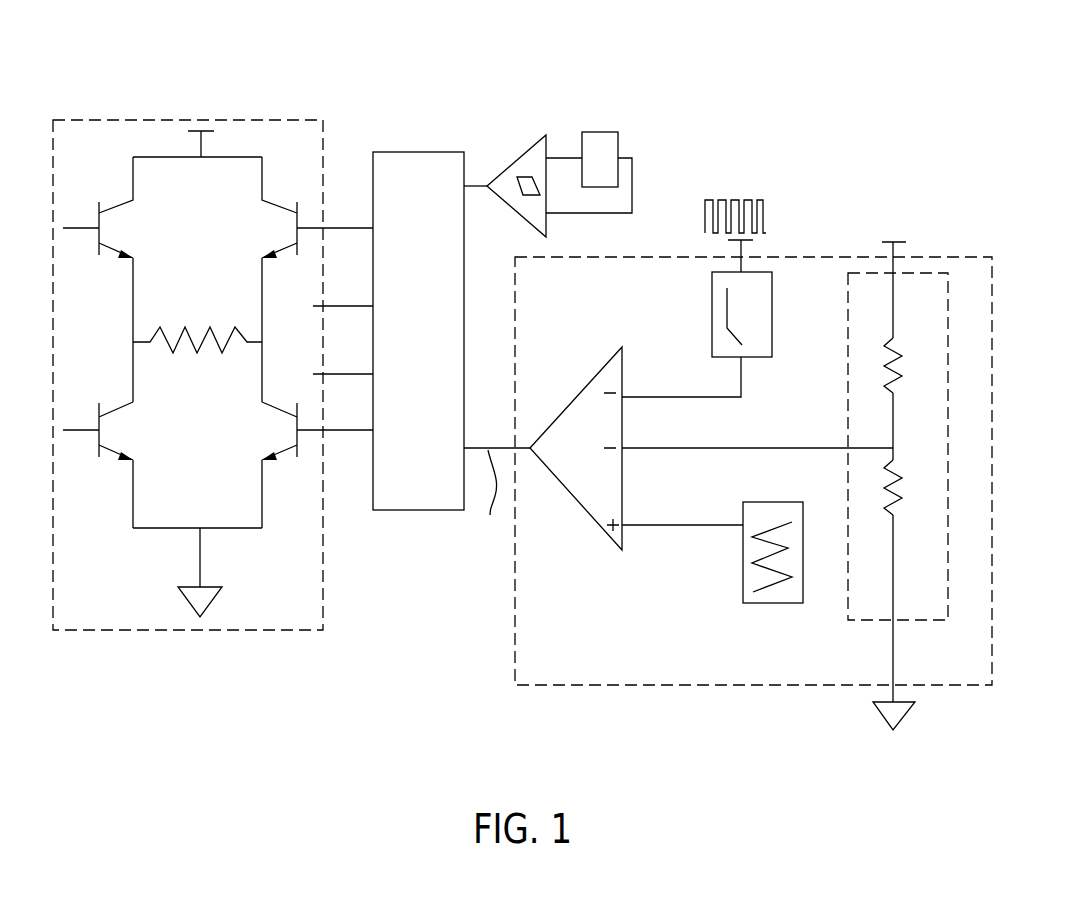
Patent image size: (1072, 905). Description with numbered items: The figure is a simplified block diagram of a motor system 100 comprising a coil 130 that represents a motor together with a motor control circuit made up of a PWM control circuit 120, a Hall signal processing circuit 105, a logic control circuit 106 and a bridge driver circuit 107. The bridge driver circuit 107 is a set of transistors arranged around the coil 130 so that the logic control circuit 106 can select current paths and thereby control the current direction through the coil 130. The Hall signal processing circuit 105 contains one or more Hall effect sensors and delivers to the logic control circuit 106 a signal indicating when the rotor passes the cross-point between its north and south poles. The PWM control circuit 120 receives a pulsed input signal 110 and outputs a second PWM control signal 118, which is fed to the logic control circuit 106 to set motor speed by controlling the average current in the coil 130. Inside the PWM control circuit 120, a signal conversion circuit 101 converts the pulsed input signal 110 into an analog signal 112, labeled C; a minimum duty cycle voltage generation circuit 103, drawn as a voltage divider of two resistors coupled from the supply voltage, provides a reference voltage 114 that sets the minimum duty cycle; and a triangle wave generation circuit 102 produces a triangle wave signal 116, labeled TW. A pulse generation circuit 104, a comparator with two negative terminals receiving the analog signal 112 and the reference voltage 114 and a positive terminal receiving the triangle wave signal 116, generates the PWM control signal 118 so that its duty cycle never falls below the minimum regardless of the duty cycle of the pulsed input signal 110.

The motor system 100 is at (986, 97).
The signal conversion circuit 101 is at (712, 325).
The triangle wave generation circuit 102 is at (763, 603).
The minimum duty cycle voltage generation circuit 103 is at (908, 620).
The pulse generation circuit 104 is at (592, 459).
The Hall signal processing circuit 105 is at (523, 158).
The logic control circuit 106 is at (432, 475).
The bridge driver circuit 107 is at (135, 607).
The pulsed input signal 110 is at (767, 222).
The analog signal 112 is at (706, 381).
The reference voltage 114 is at (757, 448).
The triangle wave signal 116 is at (682, 526).
The PWM control signal 118 is at (479, 481).
The PWM control circuit 120 is at (997, 247).
The coil 130 is at (190, 326).